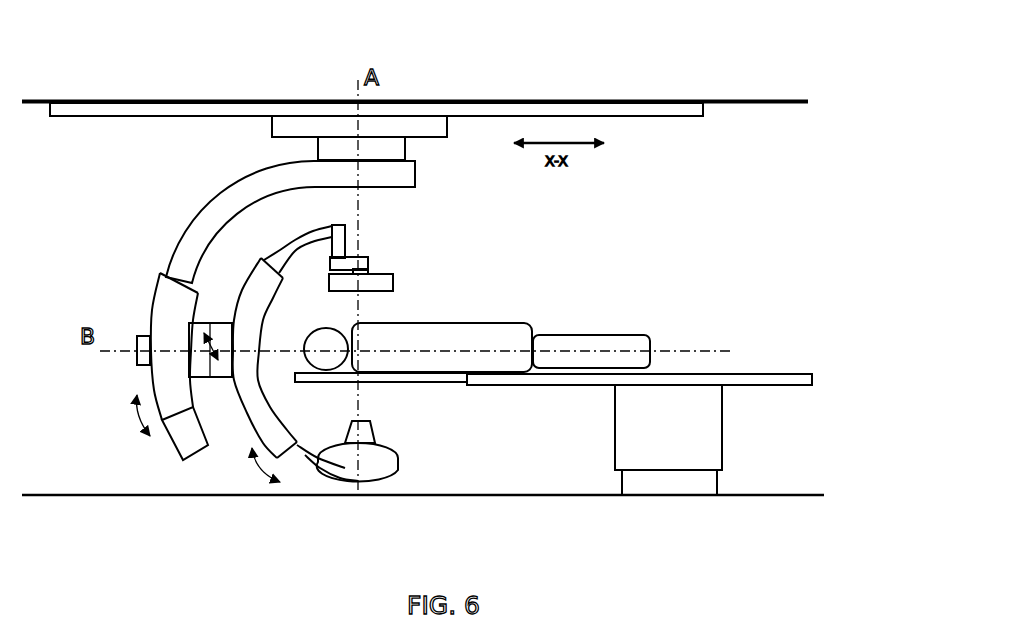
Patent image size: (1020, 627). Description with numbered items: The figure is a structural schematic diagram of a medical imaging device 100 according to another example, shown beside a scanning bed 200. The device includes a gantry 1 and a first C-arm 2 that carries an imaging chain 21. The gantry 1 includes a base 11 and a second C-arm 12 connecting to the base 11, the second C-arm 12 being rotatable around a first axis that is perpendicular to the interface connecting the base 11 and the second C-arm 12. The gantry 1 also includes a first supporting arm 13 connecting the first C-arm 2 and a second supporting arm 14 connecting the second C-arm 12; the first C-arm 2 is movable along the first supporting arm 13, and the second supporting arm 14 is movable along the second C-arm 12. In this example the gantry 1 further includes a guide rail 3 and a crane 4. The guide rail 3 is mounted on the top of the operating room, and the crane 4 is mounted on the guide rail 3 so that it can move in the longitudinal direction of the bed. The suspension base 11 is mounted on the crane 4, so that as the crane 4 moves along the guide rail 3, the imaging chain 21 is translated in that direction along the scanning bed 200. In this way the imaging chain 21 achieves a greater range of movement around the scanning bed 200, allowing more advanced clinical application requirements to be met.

The medical imaging device 100 is at (240, 148).
The gantry 1 is at (226, 344).
The first C-arm 2 is at (311, 470).
The guide rail 3 is at (642, 110).
The crane 4 is at (413, 120).
The base 11 is at (339, 135).
The second C-arm 12 is at (178, 252).
The first supporting arm 13 is at (260, 412).
The second supporting arm 14 is at (172, 386).
The imaging chain 21 is at (380, 265).
The scanning bed 200 is at (757, 378).